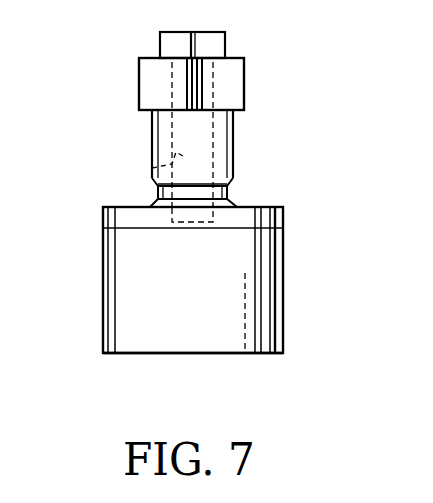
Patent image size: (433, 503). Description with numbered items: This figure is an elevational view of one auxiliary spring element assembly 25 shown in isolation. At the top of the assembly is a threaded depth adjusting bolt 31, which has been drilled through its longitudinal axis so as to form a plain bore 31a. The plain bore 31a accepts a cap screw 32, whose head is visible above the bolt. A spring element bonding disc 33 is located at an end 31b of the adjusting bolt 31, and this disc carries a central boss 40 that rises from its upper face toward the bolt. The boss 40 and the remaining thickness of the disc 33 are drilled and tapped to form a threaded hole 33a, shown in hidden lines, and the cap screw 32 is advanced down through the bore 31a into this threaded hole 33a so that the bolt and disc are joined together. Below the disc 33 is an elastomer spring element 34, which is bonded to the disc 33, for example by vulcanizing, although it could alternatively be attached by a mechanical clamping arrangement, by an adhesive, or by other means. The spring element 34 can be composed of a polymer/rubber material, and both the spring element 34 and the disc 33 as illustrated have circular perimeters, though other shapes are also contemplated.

The auxiliary spring element assembly 25 is at (268, 133).
The threaded depth adjusting bolt 31 is at (152, 142).
The plain bore 31a is at (152, 168).
The end of the adjusting bolt 31b is at (241, 180).
The cap screw 32 is at (160, 41).
The spring element bonding disc 33 is at (283, 219).
The threaded hole 33a is at (172, 228).
The elastomer spring element 34 is at (200, 355).
The central boss 40 is at (230, 196).